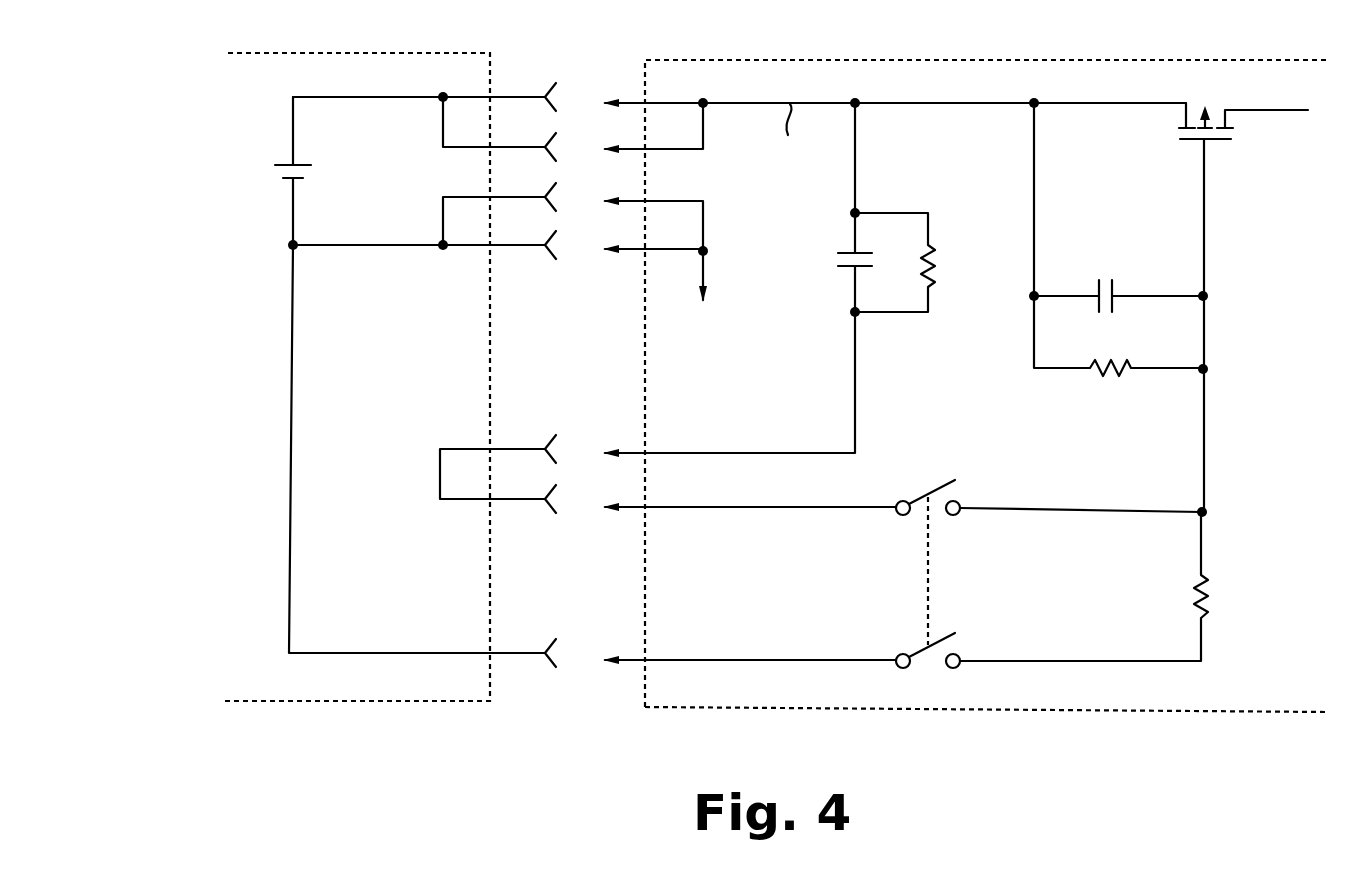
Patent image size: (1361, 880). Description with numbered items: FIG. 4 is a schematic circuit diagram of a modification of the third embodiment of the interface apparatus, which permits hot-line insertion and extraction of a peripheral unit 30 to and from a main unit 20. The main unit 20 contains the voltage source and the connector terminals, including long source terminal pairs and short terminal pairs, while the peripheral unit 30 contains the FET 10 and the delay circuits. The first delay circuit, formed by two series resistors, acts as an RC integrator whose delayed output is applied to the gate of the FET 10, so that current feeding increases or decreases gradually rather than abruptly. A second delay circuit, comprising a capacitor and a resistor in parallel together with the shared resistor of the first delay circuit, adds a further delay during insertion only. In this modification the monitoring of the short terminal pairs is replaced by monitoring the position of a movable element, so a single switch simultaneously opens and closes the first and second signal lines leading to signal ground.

The FET 10 is at (1232, 145).
The main unit 20 is at (348, 701).
The peripheral unit 30 is at (965, 418).